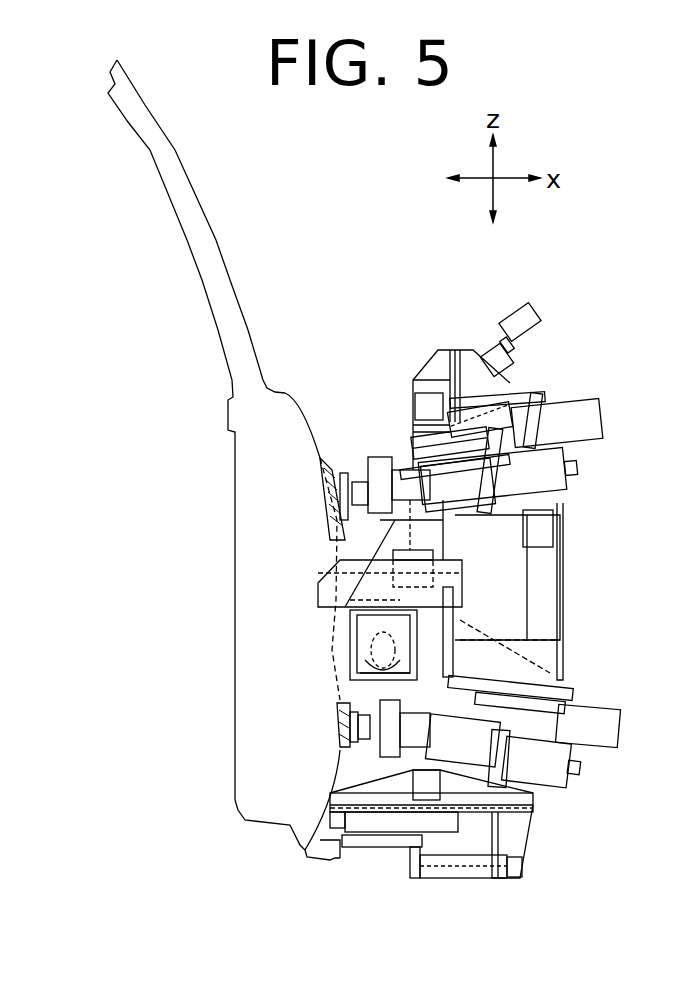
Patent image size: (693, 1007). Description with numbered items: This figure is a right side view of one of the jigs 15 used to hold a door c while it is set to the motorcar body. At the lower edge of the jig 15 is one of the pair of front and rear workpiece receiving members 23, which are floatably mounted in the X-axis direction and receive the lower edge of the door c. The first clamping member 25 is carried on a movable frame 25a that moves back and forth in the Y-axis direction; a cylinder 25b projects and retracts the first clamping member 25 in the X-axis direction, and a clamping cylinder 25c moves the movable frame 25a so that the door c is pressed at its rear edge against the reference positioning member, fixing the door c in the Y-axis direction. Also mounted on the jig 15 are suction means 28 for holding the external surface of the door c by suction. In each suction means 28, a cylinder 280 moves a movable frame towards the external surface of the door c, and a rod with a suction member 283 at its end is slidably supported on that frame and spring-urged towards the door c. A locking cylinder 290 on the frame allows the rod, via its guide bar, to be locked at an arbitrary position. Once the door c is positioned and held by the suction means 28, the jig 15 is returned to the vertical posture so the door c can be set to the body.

The jig 15 is at (428, 352).
The cylinder 280 is at (592, 418).
The locking cylinder 290 is at (556, 480).
The suction means 28 is at (340, 457).
The suction member 283 is at (320, 467).
The first clamping member 25 is at (330, 583).
The movable frame 25a is at (345, 642).
The cylinder 25b is at (345, 622).
The clamping cylinder 25c is at (335, 668).
The workpiece receiving member 23 is at (300, 855).
The door C is at (247, 483).